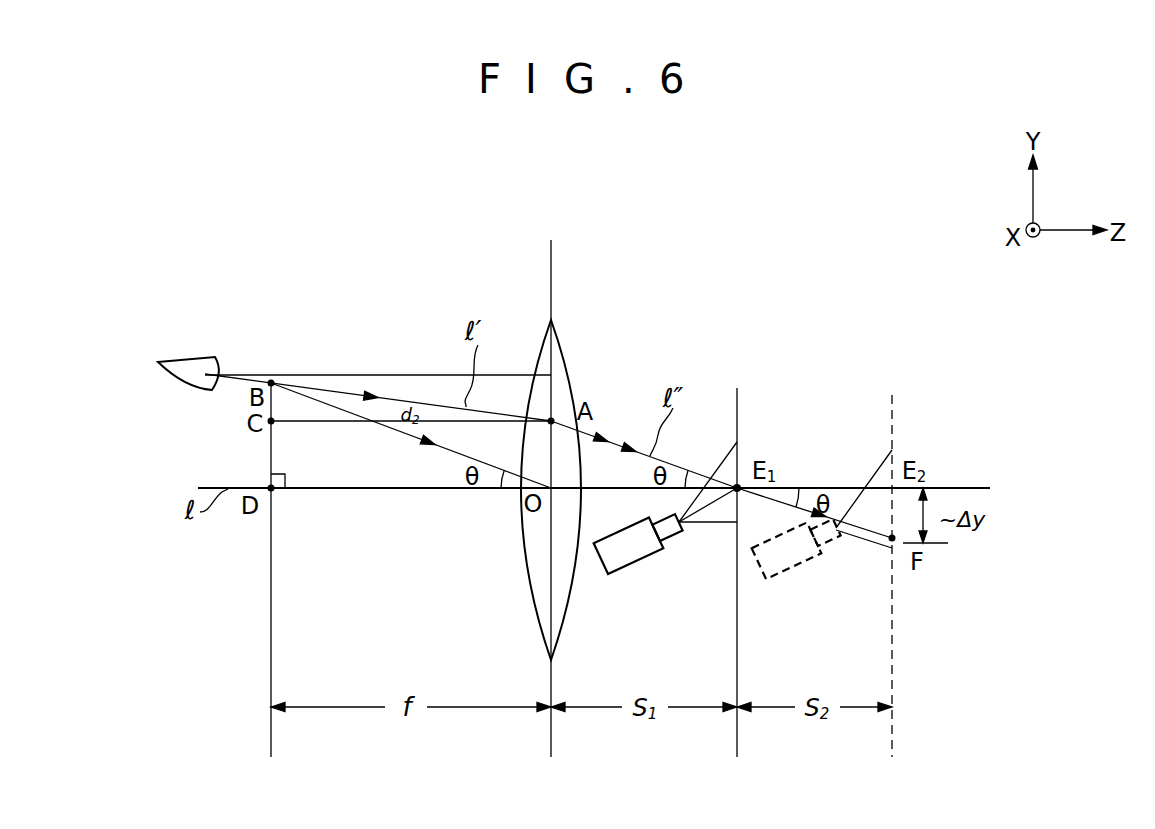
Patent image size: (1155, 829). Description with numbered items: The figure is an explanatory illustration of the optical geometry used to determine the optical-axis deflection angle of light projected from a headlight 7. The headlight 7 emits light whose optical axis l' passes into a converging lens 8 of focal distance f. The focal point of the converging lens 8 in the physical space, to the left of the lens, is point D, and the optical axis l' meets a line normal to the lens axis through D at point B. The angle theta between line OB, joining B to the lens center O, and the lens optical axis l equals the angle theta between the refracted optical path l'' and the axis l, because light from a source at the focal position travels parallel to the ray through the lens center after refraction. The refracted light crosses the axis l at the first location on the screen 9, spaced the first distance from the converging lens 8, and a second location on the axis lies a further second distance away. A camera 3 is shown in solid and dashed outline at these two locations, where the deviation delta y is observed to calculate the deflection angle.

The camera 3 is at (633, 566).
The headlight 7 is at (205, 358).
The converging lens 8 is at (563, 347).
The screen 9 is at (892, 402).